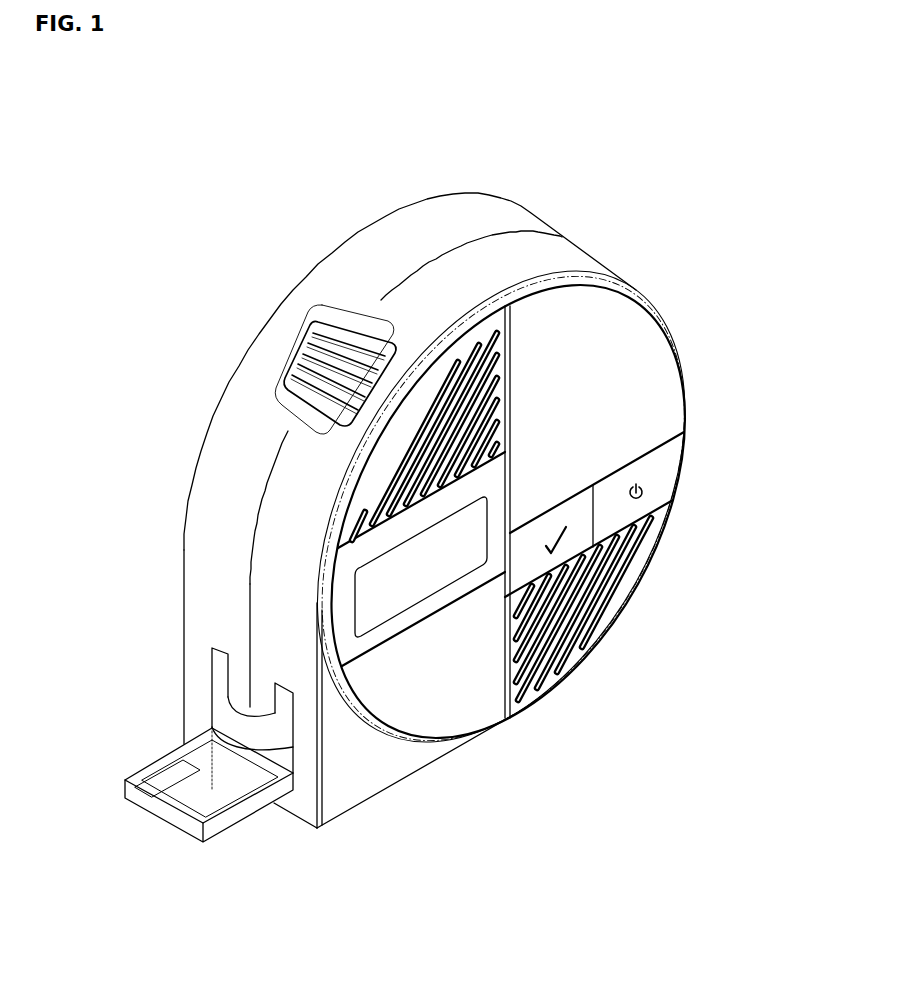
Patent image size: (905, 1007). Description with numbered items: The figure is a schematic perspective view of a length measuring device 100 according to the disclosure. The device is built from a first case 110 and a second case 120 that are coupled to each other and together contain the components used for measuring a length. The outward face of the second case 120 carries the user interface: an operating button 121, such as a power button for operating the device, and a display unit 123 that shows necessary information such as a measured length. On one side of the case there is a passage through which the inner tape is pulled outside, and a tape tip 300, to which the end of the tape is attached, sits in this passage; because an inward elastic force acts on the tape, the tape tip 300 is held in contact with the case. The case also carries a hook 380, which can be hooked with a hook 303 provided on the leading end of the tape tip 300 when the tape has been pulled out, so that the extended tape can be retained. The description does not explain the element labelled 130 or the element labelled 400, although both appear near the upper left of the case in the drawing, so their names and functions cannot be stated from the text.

The length measuring device 100 is at (362, 196).
The first case 110 is at (472, 220).
The second case 120 is at (531, 262).
The operating button 121 is at (563, 550).
The display unit 123 is at (420, 580).
The wheel recess 130 is at (285, 407).
The thumb wheel 400 is at (317, 350).
The hook 380 is at (240, 692).
The tape tip 300 is at (232, 817).
The hook 303 is at (160, 808).